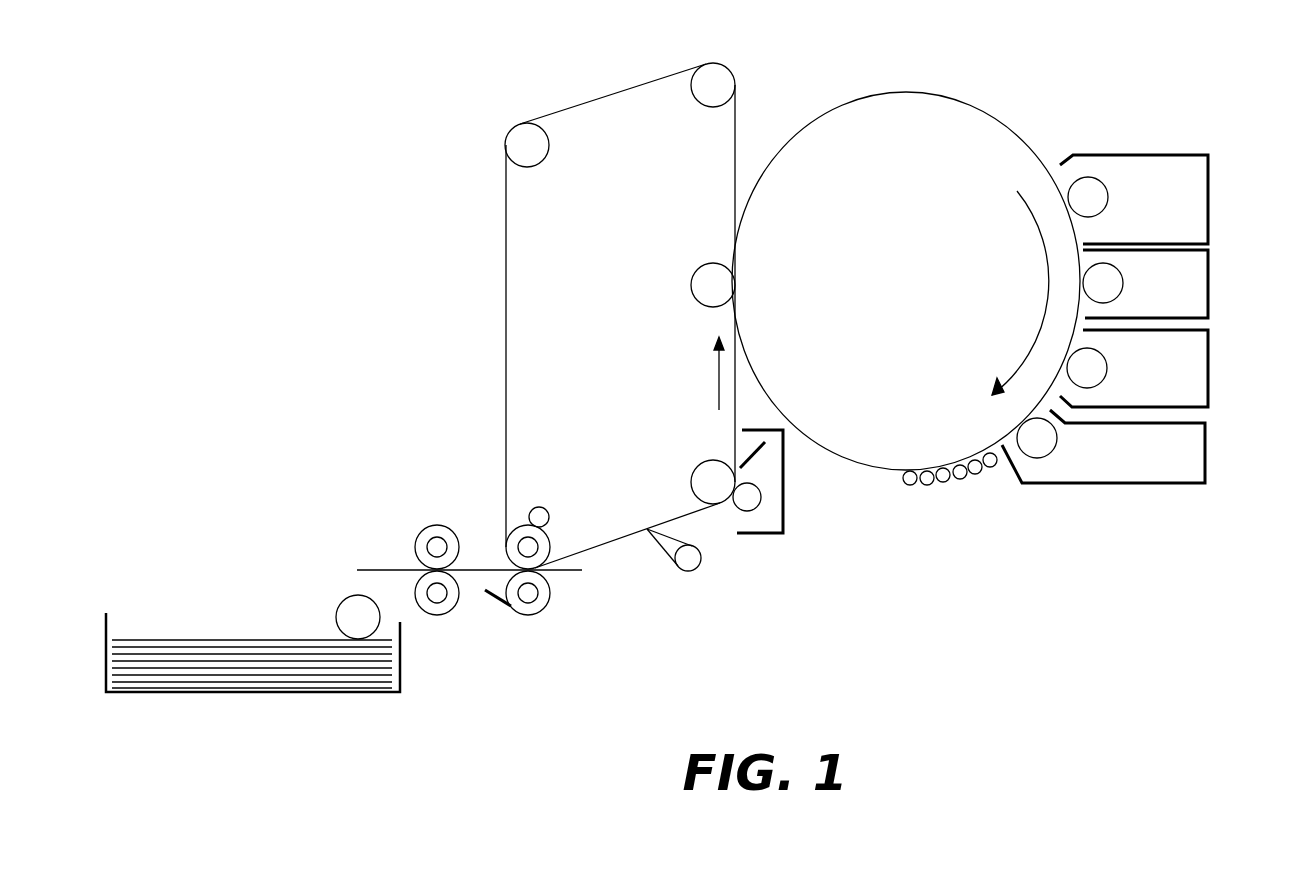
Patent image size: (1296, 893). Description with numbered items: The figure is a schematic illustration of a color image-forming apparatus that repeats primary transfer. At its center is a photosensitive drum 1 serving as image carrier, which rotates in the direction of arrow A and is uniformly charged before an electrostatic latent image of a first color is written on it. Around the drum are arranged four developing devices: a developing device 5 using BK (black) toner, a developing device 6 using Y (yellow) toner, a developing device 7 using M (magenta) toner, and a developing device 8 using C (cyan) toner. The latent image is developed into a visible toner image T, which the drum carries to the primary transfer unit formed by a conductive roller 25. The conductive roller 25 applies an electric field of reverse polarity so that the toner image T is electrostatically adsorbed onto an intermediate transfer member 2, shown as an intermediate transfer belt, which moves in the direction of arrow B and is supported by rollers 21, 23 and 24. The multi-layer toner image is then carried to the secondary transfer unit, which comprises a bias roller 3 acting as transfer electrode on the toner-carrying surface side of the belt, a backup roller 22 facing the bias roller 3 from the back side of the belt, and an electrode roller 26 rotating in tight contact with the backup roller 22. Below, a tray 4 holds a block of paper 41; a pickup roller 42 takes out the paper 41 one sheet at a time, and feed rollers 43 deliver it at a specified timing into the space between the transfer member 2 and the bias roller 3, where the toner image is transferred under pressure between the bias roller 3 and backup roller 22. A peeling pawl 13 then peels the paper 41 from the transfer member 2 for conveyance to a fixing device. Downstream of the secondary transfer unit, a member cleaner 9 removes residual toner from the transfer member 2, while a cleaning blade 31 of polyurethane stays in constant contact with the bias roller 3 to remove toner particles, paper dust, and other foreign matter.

The photosensitive drum 1 is at (1015, 134).
The intermediate transfer member 2 is at (505, 279).
The bias roller 3 is at (550, 611).
The tray 4 is at (297, 694).
The developing device 5 is at (1208, 200).
The developing device 6 is at (1208, 285).
The developing device 7 is at (1208, 365).
The developing device 8 is at (1205, 440).
The member cleaner 9 is at (786, 512).
The peeling pawl 13 is at (700, 563).
The roller 21 is at (727, 66).
The backup roller 22 is at (524, 522).
The roller 23 is at (525, 122).
The roller 24 is at (700, 466).
The conductive roller 25 is at (703, 264).
The electrode roller 26 is at (550, 515).
The cleaning blade 31 is at (493, 600).
The paper 41 is at (233, 640).
The pickup roller 42 is at (347, 598).
The feed rollers 43 is at (422, 530).
The arrow A is at (1027, 352).
The arrow B is at (716, 385).
The toner image T is at (943, 484).